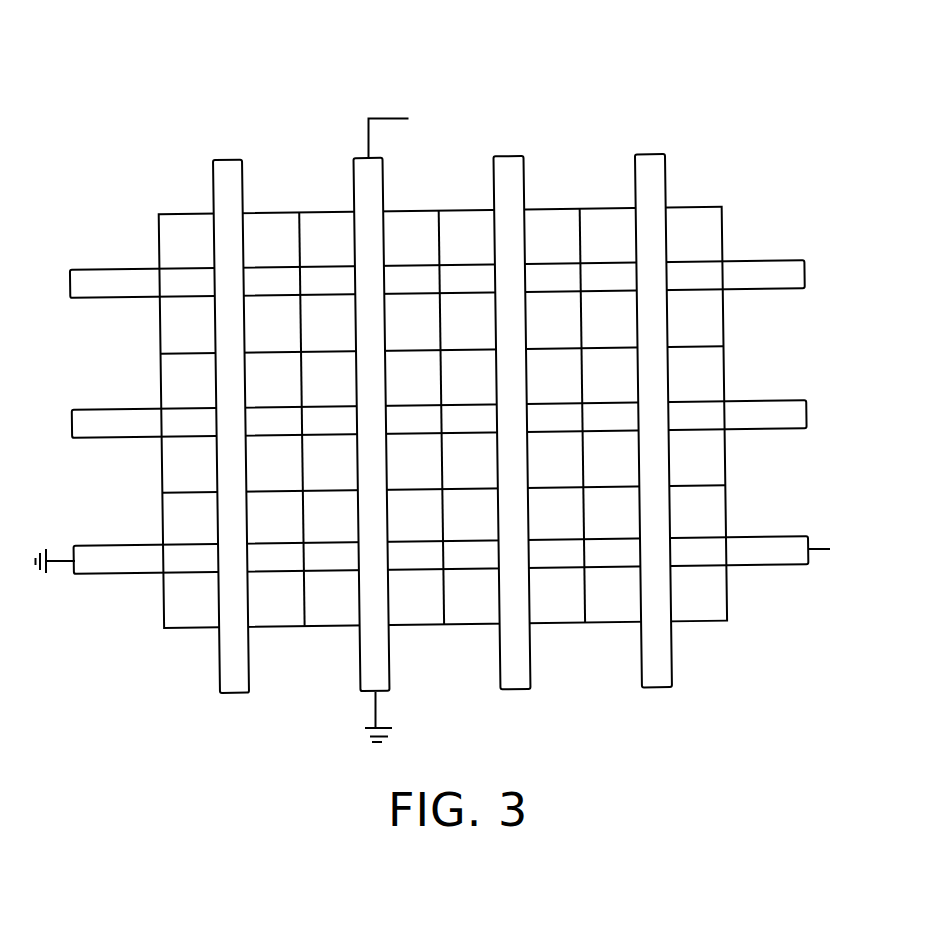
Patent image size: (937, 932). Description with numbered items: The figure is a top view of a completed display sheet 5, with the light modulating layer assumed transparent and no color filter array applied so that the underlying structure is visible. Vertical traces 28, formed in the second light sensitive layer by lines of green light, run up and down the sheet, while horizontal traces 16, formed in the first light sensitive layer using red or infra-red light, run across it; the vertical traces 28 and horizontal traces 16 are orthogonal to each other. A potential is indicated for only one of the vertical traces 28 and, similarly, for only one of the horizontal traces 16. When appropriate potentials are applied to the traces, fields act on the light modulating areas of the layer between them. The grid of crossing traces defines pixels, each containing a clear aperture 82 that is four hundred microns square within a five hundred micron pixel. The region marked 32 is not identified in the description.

The sheet 5 is at (493, 102).
The vertical traces 28 is at (227, 160).
The clear aperture 82 is at (158, 234).
The horizontal traces 16 is at (122, 292).
The pixel cell / grid 32 is at (171, 333).